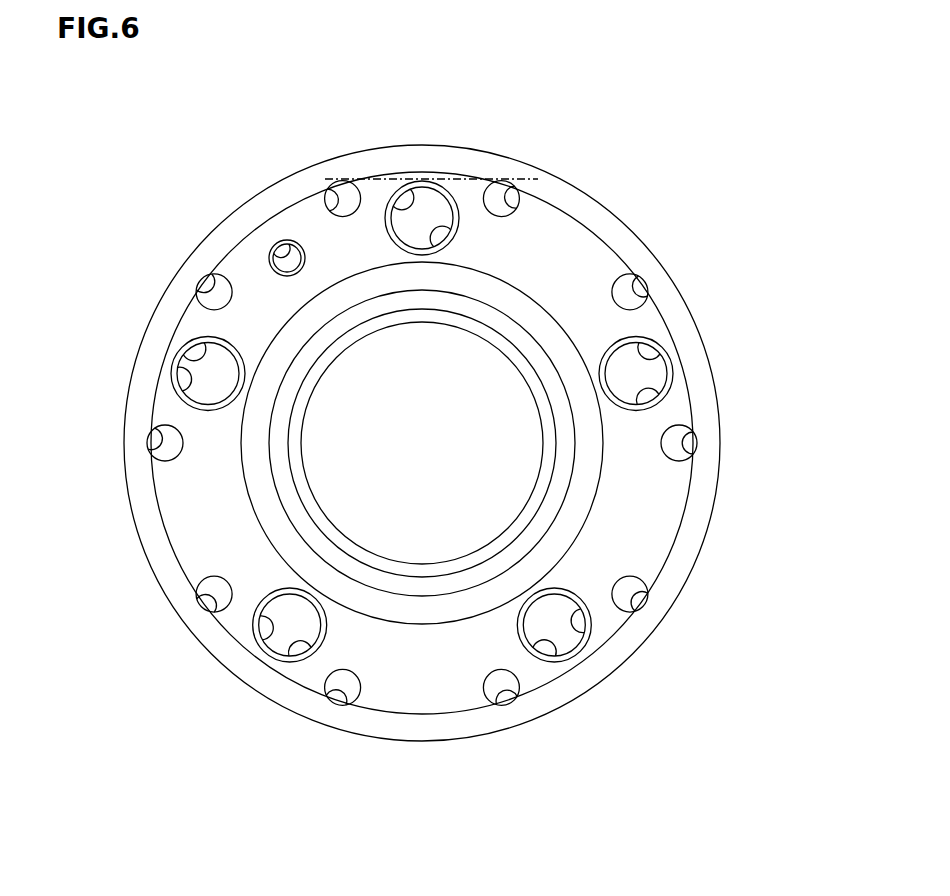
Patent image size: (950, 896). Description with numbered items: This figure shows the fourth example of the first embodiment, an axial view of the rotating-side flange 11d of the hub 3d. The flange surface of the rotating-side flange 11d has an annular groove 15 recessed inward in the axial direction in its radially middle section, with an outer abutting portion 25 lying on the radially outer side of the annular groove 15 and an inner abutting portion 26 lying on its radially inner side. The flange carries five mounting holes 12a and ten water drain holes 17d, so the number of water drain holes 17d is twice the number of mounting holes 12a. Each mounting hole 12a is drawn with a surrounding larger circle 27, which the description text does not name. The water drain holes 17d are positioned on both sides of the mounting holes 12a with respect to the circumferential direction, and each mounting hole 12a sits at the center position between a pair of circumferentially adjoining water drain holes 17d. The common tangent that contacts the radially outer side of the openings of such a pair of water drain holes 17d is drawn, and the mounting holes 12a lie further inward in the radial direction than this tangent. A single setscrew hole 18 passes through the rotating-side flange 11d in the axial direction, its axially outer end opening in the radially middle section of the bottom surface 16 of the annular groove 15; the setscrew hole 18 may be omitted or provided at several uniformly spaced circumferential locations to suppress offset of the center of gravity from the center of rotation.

The hub 3d is at (512, 132).
The rotating-side flange 11d is at (693, 320).
The mounting holes 12a is at (453, 217).
The annular groove 15 is at (668, 557).
The bottom surface 16 is at (177, 518).
The water drain holes 17d is at (328, 190).
The setscrew hole 18 is at (270, 247).
The outer abutting portion 25 is at (690, 548).
The inner abutting portion 26 is at (447, 613).
The counterbore 27 is at (406, 184).